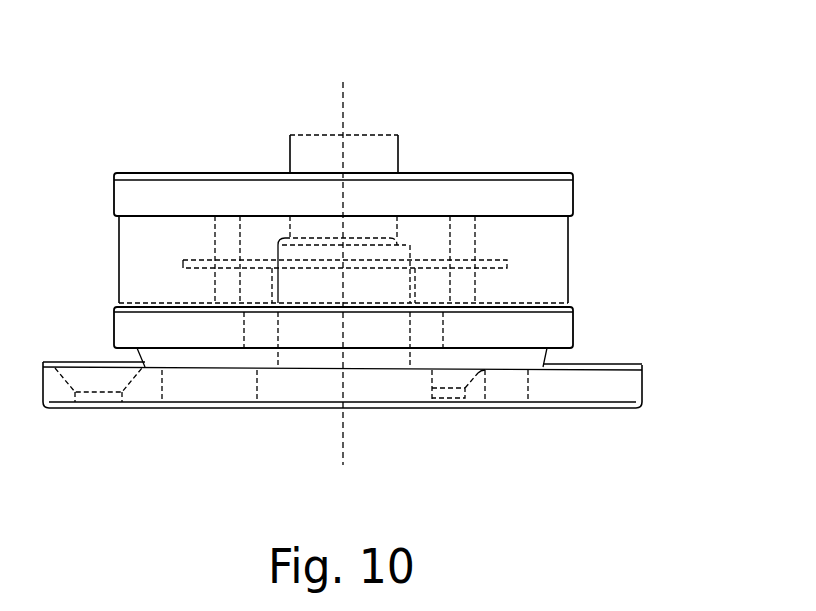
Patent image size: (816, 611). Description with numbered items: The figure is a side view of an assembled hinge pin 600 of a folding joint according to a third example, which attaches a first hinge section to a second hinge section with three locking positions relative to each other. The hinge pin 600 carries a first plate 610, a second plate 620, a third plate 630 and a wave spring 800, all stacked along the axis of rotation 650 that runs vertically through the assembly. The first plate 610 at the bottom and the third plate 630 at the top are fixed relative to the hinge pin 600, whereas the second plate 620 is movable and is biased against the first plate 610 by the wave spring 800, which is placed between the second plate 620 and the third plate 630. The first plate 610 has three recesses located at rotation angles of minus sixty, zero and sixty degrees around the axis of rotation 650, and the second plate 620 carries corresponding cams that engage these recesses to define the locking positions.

The hinge pin 600 is at (305, 138).
The third plate 630 is at (548, 200).
The wave spring 800 is at (557, 252).
The second plate 620 is at (563, 331).
The first plate 610 is at (632, 387).
The axis of rotation 650 is at (347, 444).